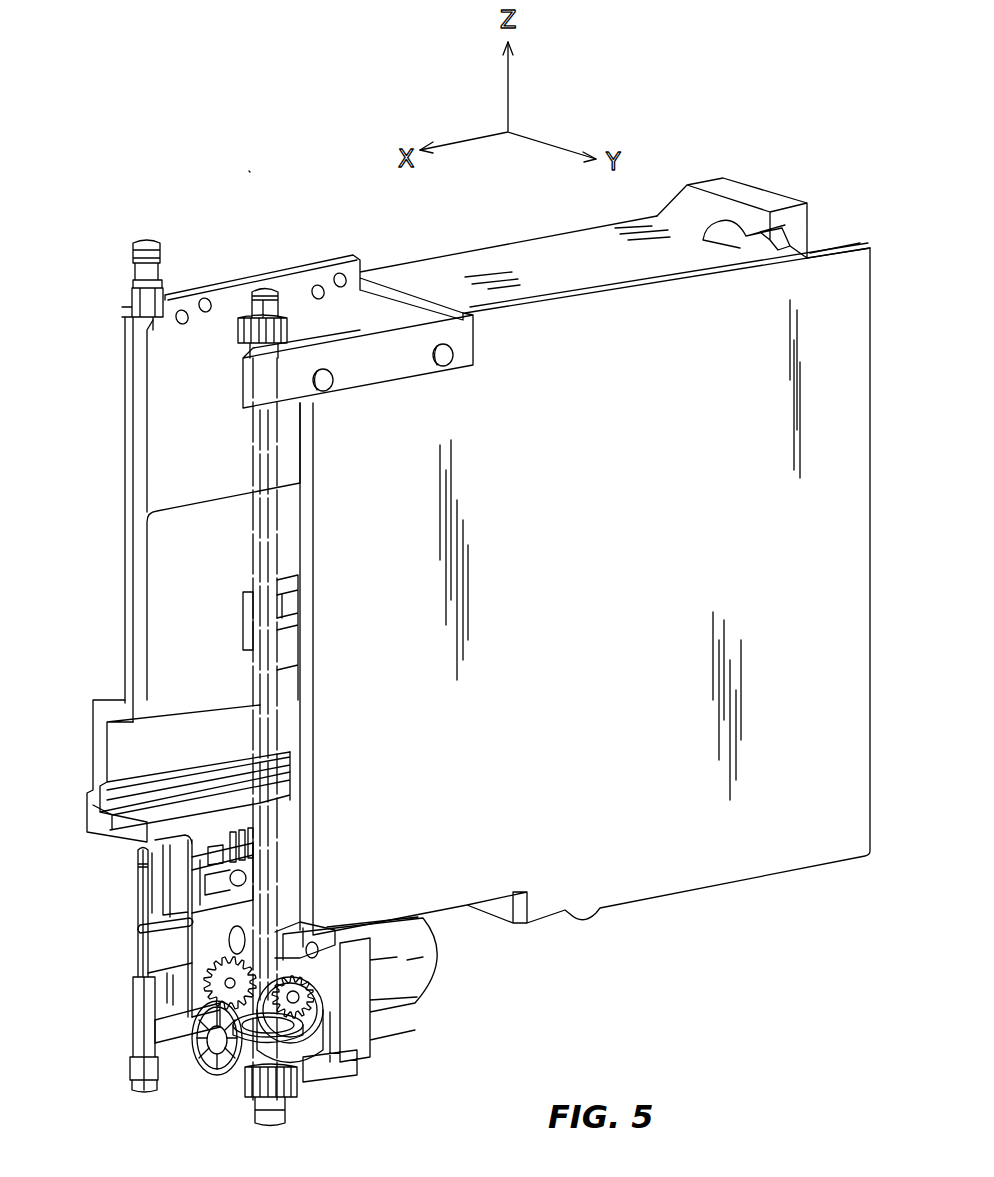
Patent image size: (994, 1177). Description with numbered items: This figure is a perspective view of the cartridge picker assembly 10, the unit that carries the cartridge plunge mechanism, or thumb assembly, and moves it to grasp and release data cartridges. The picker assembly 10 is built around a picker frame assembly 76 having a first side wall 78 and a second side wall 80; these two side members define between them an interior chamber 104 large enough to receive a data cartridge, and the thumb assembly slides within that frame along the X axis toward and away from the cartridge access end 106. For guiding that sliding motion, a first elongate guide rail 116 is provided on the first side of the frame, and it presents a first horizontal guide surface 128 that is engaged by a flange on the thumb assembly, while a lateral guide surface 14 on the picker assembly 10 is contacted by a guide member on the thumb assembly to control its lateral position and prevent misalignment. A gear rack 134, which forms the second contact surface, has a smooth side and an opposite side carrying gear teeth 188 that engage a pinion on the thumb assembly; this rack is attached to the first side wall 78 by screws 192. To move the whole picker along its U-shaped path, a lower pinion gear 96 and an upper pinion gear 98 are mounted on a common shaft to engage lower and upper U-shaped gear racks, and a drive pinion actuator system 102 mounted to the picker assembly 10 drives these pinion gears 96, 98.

The cartridge picker assembly 10 is at (243, 164).
The lateral guide surface 14 is at (104, 852).
The picker frame assembly 76 is at (772, 180).
The first side wall 78 is at (480, 247).
The second side wall 80 is at (609, 586).
The lower pinion gear 96 is at (243, 1083).
The upper pinion gear 98 is at (245, 332).
The drive pinion actuator system 102 is at (450, 986).
The interior chamber 104 is at (180, 490).
The cartridge access end 106 is at (123, 612).
The first elongate guide rail 116 is at (160, 782).
The first horizontal guide surface 128 is at (160, 813).
The gear rack 134 is at (170, 896).
The gear teeth 188 is at (243, 830).
The screws 192 is at (220, 950).